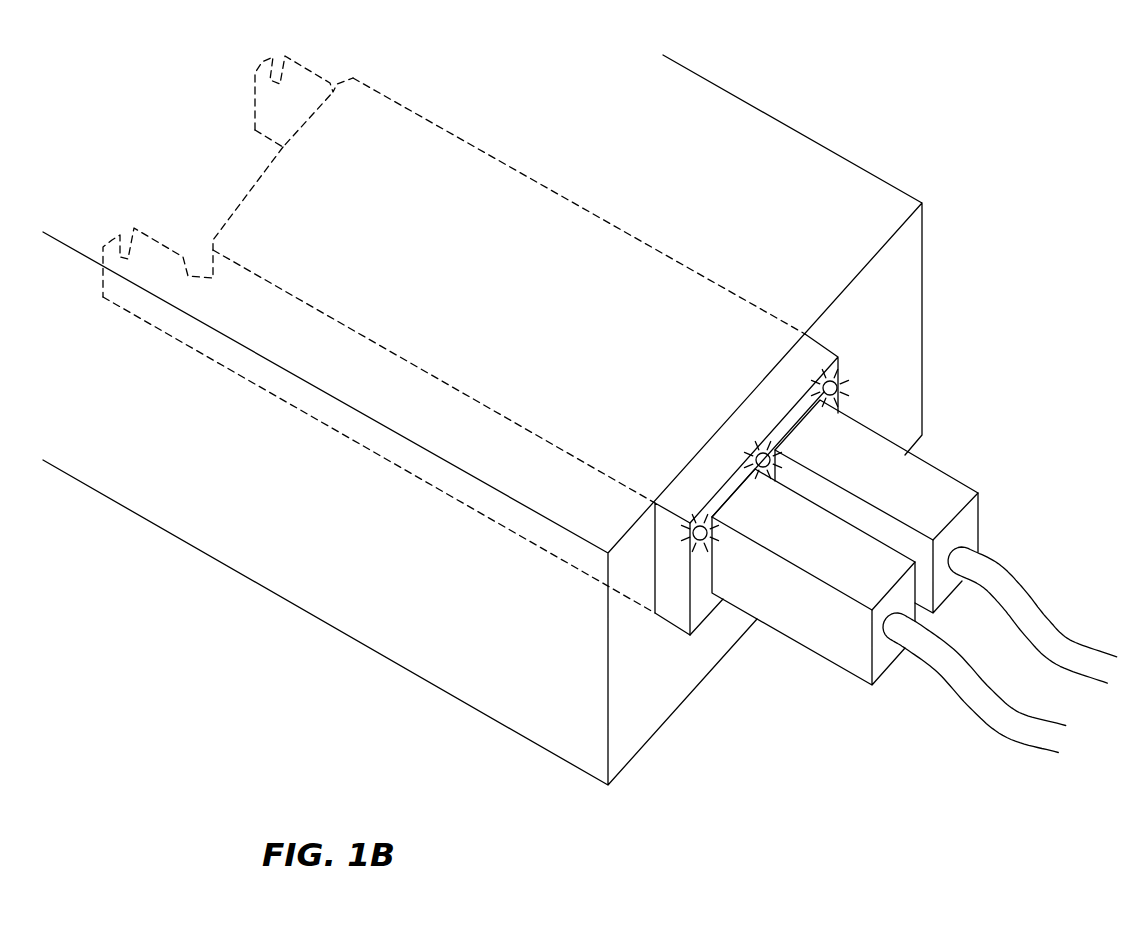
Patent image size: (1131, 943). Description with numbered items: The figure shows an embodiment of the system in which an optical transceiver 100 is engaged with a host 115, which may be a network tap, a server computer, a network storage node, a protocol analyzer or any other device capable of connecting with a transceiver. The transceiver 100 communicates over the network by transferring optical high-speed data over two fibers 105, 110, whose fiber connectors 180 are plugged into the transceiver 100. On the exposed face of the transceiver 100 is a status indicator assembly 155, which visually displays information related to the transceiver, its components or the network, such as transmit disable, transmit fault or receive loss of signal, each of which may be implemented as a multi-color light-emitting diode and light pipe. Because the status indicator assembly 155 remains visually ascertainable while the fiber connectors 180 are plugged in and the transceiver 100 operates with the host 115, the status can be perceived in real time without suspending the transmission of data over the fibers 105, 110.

The transceiver 100 is at (852, 399).
The fiber 105 is at (1017, 592).
The fiber 110 is at (1013, 728).
The host 115 is at (928, 296).
The status indicator assembly 155 is at (802, 365).
The fiber connectors 180 is at (831, 543).